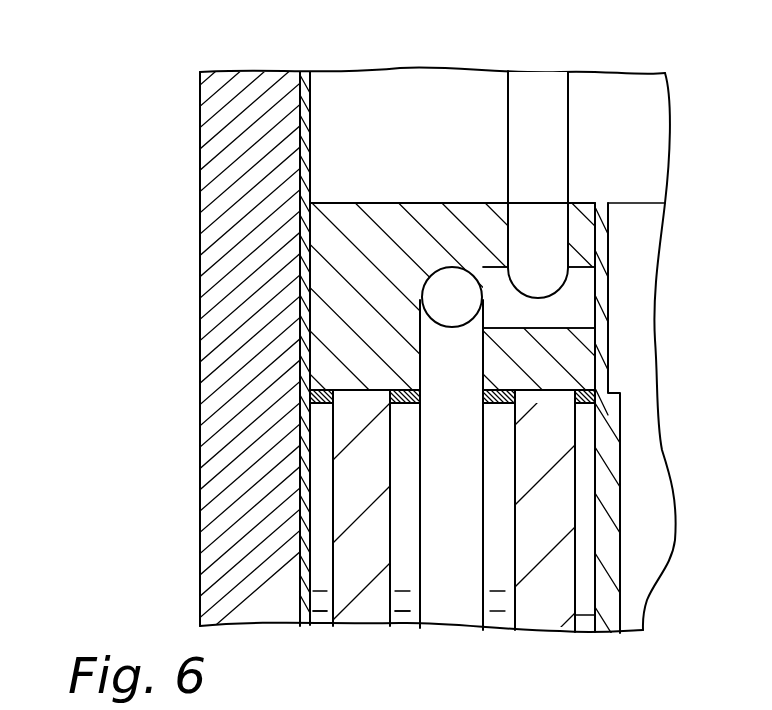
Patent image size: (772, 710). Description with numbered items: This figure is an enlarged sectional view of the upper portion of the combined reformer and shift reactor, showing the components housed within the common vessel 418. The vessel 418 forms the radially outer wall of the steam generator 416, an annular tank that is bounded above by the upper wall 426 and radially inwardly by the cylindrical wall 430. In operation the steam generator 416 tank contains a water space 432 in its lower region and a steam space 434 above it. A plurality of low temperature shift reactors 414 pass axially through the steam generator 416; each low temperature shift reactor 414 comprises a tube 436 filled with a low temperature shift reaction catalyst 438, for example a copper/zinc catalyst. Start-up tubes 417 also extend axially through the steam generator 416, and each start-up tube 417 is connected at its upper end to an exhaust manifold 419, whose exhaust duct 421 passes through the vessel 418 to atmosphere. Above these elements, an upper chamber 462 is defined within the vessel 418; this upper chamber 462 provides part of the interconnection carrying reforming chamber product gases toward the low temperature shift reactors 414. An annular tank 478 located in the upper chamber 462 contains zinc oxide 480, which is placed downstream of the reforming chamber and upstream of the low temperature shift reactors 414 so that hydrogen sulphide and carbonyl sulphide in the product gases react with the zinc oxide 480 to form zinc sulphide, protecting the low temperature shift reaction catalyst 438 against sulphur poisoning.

The upper chamber 462 is at (394, 82).
The exhaust duct 421 is at (560, 98).
The vessel 418 is at (305, 158).
The annular tank 478 is at (318, 247).
The zinc oxide 480 is at (320, 312).
The upper wall 426 is at (400, 388).
The steam generator 416 is at (316, 422).
The steam space 434 is at (333, 455).
The low temperature shift reactor 414 is at (340, 505).
The low temperature shift reaction catalyst 438 is at (337, 543).
The tube 436 is at (337, 572).
The start-up tube 417 is at (462, 478).
The exhaust manifold 419 is at (577, 289).
The cylindrical wall 430 is at (600, 293).
The water space 432 is at (400, 627).